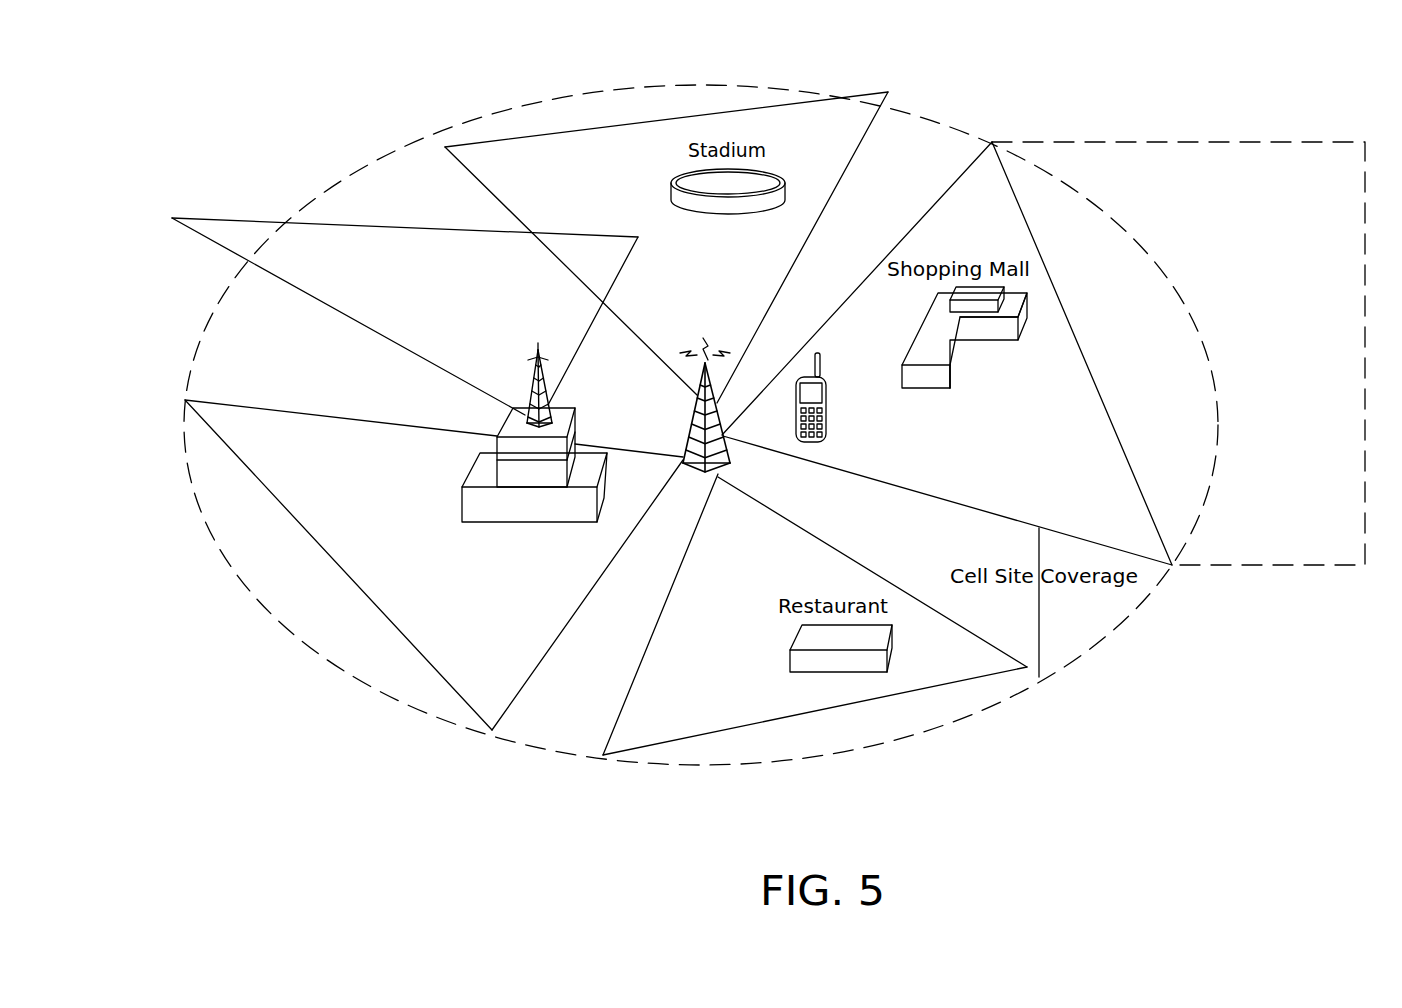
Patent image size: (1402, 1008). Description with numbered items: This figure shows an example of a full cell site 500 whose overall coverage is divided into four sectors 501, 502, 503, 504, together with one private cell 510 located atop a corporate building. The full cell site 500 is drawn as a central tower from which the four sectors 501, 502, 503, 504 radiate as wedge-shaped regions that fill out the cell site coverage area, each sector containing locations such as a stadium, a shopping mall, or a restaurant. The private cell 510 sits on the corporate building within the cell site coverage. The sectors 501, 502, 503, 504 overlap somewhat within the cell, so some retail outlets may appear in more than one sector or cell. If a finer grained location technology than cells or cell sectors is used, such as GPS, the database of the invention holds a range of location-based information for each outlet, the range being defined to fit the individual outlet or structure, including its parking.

The full cell site 500 is at (731, 466).
The sector 501 is at (793, 700).
The sector 502 is at (988, 177).
The sector 503 is at (852, 115).
The sector 504 is at (490, 712).
The private cell 510 is at (233, 237).